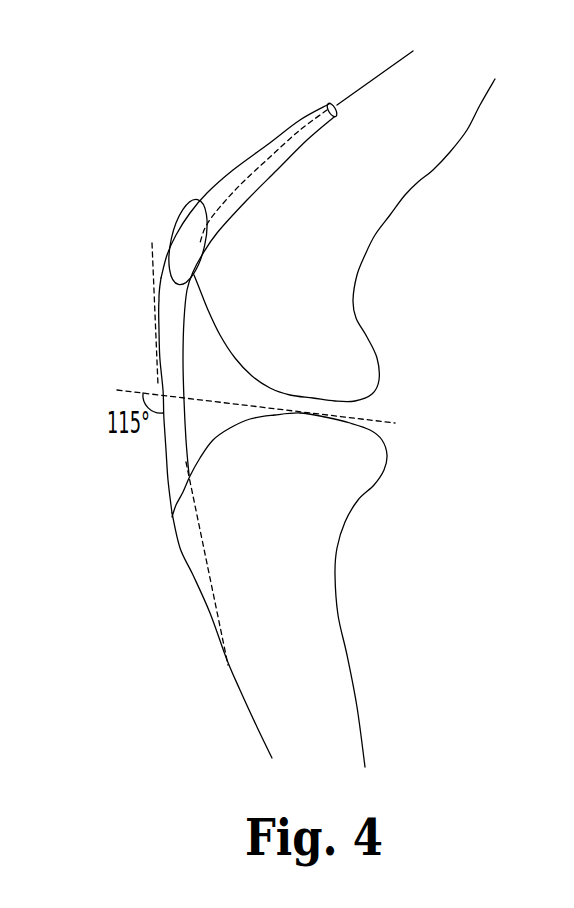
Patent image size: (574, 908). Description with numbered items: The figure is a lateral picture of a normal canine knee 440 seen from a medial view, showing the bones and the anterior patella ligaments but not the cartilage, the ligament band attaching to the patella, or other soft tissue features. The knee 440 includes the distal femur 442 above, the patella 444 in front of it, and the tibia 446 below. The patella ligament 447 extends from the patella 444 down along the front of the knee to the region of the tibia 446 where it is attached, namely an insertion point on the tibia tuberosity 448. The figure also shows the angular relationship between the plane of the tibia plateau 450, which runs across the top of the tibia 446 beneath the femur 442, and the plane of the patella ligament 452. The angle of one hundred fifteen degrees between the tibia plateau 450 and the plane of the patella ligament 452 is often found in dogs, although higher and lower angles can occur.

The normal canine knee 440 is at (198, 390).
The distal femur 442 is at (296, 277).
The patella 444 is at (182, 242).
The tibia 446 is at (297, 507).
The patella ligament 447 is at (167, 362).
The tibia tuberosity 448 is at (192, 539).
The tibia plateau 450 is at (382, 417).
The plane of the patella ligament 452 is at (153, 270).